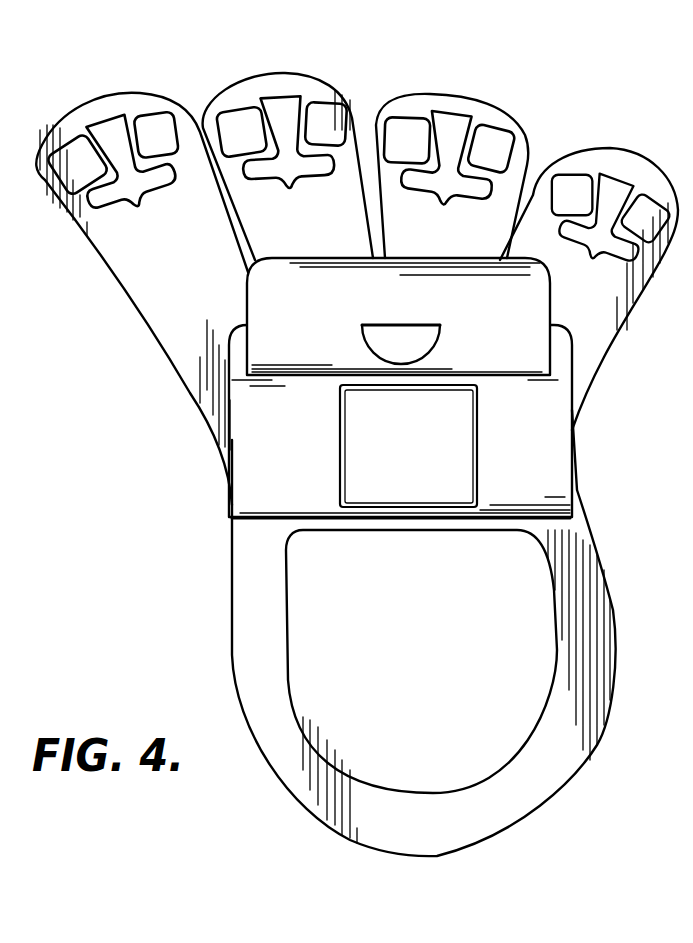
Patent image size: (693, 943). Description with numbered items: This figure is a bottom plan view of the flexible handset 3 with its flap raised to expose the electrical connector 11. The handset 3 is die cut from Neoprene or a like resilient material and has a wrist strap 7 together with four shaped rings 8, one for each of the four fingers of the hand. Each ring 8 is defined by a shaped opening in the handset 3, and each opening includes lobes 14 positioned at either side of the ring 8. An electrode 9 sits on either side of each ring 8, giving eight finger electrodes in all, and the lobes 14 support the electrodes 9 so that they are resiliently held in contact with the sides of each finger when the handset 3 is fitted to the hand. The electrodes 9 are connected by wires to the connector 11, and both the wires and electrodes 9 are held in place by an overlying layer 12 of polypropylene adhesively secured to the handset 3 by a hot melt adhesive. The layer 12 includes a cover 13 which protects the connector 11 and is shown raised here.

The flexible handset 3 is at (357, 447).
The wrist strap 7 is at (257, 613).
The shaped rings 8 is at (120, 113).
The electrode 9 is at (230, 120).
The connector 11 is at (430, 455).
The overlying layer 12 is at (170, 297).
The cover 13 is at (250, 487).
The lobes 14 is at (321, 96).